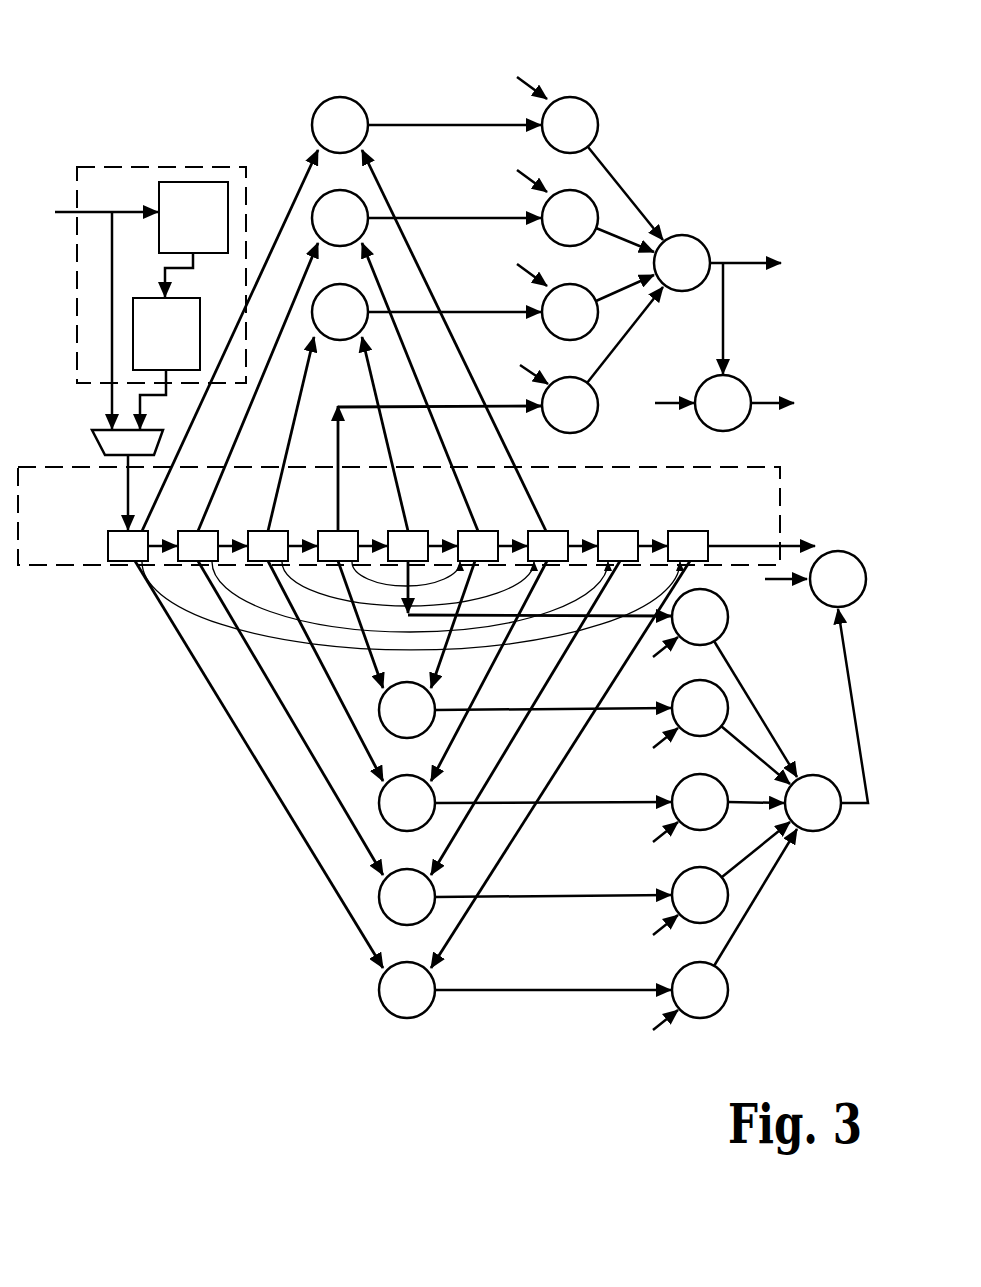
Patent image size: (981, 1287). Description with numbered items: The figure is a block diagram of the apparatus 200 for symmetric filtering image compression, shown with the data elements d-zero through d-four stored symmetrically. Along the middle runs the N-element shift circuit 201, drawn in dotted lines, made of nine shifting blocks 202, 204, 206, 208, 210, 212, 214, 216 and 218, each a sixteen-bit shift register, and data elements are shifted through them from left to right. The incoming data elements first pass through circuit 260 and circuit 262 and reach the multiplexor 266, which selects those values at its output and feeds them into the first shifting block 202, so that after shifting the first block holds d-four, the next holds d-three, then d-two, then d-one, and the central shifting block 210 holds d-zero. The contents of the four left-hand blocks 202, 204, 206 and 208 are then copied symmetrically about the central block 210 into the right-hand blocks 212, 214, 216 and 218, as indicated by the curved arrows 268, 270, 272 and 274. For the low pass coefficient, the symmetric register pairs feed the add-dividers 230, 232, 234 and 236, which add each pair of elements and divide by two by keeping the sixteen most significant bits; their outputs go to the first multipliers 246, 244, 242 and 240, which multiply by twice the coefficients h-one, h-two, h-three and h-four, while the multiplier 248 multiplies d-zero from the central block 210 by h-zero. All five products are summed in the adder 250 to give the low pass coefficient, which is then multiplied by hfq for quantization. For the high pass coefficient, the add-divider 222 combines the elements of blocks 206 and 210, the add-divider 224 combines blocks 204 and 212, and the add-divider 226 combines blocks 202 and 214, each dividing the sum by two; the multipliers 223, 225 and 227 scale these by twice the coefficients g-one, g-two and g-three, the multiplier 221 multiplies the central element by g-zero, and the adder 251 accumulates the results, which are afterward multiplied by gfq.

The apparatus 200 is at (110, 1010).
The N-element shift circuit 201 is at (85, 568).
The shifting block 202 is at (113, 530).
The shifting block 204 is at (194, 529).
The shifting block 206 is at (264, 529).
The shifting block 208 is at (334, 529).
The shifting block 210 is at (404, 529).
The shifting block 212 is at (474, 529).
The shifting block 214 is at (544, 529).
The shifting block 216 is at (616, 529).
The shifting block 218 is at (686, 529).
The multiplier 221 is at (574, 432).
The add-divider 222 is at (367, 296).
The multiplier 223 is at (574, 339).
The add-divider 224 is at (367, 202).
The multiplier 225 is at (574, 245).
The add-divider 226 is at (373, 89).
The multiplier 227 is at (574, 152).
The add-divider 230 is at (434, 703).
The add-divider 232 is at (434, 797).
The add-divider 234 is at (434, 891).
The add-divider 236 is at (434, 984).
The first multiplier 240 is at (722, 970).
The first multiplier 242 is at (722, 875).
The first multiplier 244 is at (722, 782).
The first multiplier 246 is at (732, 675).
The multiplier 248 is at (728, 603).
The adder 250 is at (830, 780).
The adder 251 is at (693, 237).
The circuit 260 is at (228, 190).
The circuit 262 is at (200, 305).
The multiplexor 266 is at (99, 443).
The arrow 268 is at (210, 627).
The arrow 270 is at (267, 617).
The arrow 272 is at (330, 604).
The arrow 274 is at (452, 572).